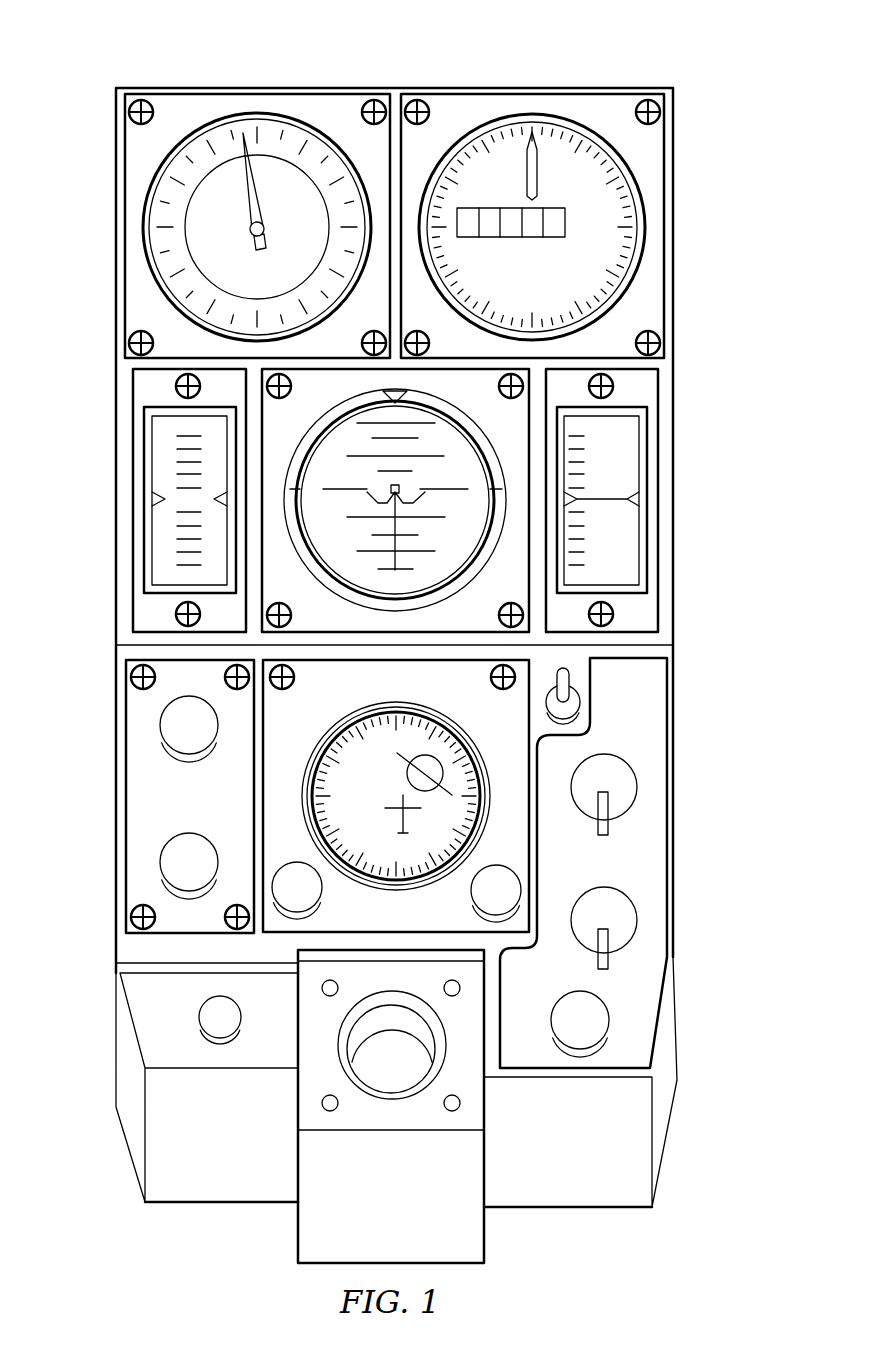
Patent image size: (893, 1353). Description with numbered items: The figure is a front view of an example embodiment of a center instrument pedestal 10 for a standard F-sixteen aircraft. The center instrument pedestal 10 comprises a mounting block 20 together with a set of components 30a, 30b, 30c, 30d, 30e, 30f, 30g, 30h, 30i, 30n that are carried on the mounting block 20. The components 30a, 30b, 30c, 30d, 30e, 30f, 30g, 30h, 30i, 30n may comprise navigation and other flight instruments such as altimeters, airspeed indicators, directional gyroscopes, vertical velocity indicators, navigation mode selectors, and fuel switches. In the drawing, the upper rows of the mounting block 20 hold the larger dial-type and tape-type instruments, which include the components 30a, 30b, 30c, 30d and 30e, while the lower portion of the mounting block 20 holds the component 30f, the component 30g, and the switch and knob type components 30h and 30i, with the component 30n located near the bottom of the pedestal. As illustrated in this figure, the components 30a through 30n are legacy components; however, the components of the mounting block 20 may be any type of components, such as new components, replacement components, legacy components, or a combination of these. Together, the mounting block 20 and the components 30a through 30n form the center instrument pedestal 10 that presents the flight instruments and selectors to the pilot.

The center instrument pedestal 10 is at (249, 62).
The mounting block 20 is at (112, 391).
The component 30a is at (130, 158).
The component 30b is at (657, 157).
The component 30c is at (640, 609).
The component 30d is at (327, 615).
The component 30e is at (150, 613).
The component 30f is at (142, 770).
The component 30g is at (512, 848).
The component 30h is at (580, 688).
The component 30i is at (610, 755).
The component 30n is at (437, 1068).